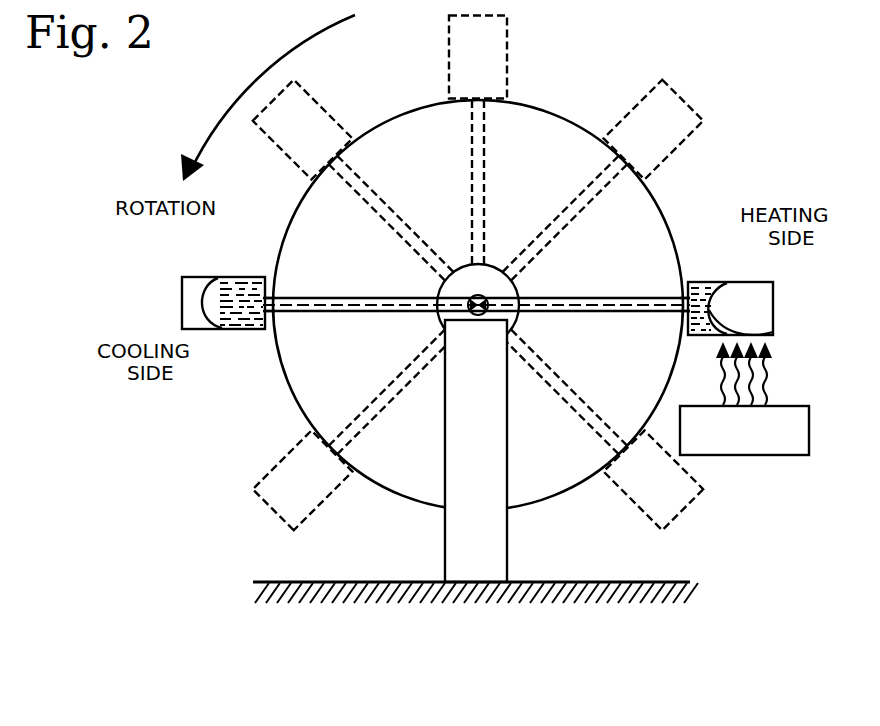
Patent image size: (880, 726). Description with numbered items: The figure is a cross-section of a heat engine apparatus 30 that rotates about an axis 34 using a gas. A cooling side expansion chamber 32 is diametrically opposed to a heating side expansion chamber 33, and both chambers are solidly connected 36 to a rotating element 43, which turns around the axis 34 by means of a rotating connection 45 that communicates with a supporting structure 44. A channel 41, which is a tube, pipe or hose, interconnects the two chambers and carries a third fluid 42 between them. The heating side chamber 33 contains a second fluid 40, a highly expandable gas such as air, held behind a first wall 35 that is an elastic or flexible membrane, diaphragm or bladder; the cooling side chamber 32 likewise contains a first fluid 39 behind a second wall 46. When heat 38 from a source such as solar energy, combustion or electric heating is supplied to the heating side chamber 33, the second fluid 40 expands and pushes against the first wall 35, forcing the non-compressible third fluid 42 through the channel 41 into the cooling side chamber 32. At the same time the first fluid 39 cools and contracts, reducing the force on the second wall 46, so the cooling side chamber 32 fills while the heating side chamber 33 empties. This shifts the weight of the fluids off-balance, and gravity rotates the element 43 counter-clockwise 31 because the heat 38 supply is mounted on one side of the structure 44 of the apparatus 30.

The apparatus 30 is at (645, 45).
The counter-clockwise rotation 31 is at (222, 116).
The cooling side expansion chamber 32 is at (181, 282).
The heating side expansion chamber 33 is at (742, 282).
The axis 34 is at (470, 300).
The first wall 35 is at (775, 331).
The connection 36 is at (266, 291).
The heat 38 is at (810, 442).
The first fluid 39 is at (190, 315).
The second fluid 40 is at (773, 306).
The channel 41 is at (592, 296).
The third fluid 42 is at (227, 318).
The element 43 is at (400, 497).
The structure 44 is at (445, 560).
The rotating connection 45 is at (485, 295).
The second wall 46 is at (202, 292).